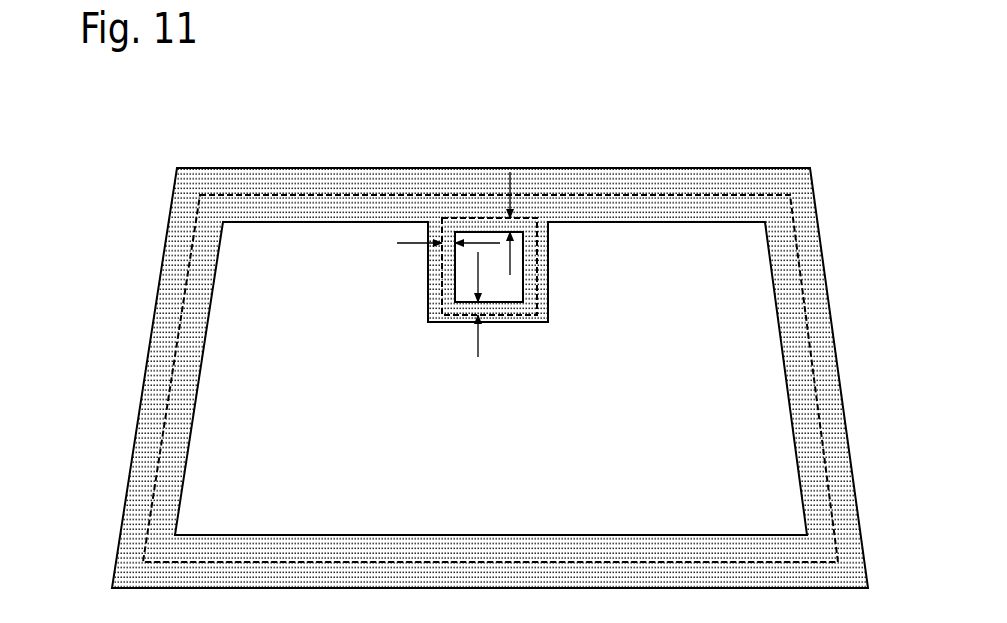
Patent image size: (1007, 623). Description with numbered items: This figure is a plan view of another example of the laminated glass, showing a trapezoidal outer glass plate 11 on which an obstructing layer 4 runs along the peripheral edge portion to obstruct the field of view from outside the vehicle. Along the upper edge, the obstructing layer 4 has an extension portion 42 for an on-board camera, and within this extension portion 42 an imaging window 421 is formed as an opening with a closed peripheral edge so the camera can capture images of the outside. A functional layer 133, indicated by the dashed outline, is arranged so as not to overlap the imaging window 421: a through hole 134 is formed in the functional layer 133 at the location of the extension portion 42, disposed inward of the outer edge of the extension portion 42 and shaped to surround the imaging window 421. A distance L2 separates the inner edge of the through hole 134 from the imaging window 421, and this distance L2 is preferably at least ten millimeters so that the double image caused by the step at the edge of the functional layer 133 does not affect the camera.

The obstructing layer 4 is at (643, 172).
The outer glass plate 11 is at (238, 385).
The extension portion 42 is at (550, 267).
The imaging window 421 is at (458, 255).
The functional layer 133 is at (347, 193).
The through hole 134 is at (532, 307).
The distance L2 is at (517, 222).